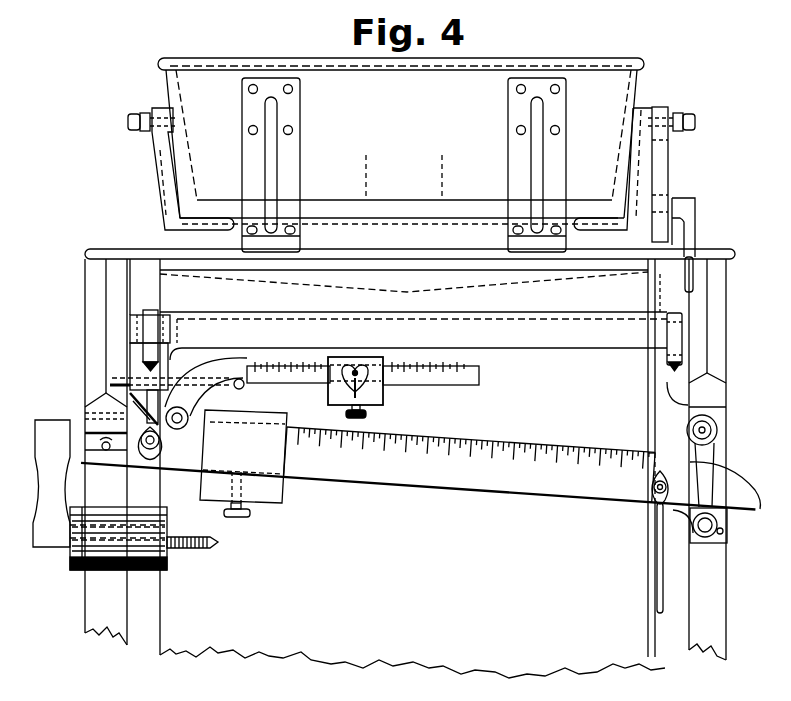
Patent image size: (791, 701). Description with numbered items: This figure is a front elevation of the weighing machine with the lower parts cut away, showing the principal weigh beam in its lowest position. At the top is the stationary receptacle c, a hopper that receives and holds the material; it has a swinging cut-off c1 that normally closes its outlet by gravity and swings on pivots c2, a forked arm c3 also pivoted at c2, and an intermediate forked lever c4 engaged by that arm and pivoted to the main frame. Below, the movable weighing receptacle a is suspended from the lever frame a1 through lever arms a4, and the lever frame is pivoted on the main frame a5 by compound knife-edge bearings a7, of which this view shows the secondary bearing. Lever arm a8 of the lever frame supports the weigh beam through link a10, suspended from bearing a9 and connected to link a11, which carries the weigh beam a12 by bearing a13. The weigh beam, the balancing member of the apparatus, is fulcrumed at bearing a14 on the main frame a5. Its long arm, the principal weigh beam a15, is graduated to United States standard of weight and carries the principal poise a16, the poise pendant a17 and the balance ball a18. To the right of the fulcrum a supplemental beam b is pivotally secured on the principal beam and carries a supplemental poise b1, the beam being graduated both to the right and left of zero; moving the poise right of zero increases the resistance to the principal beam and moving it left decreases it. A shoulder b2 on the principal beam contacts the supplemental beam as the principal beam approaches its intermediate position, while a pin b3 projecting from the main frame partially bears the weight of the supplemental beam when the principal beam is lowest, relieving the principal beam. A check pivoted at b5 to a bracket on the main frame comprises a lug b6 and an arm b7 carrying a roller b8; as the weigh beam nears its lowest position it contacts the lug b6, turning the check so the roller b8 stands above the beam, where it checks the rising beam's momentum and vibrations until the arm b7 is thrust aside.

The stationary receptacle c is at (401, 155).
The swinging cut-off c1 is at (173, 216).
The pivots c2 is at (125, 124).
The forked arm c3 is at (669, 175).
The intermediate forked lever c4 is at (696, 218).
The movable weighing receptacle a is at (410, 463).
The lever frame a1 is at (413, 315).
The lever arms a4 is at (674, 318).
The main frame a5 is at (405, 459).
The bearings a7 is at (158, 367).
The lever arm a8 is at (150, 311).
The bearing a9 is at (136, 329).
The link a10 is at (140, 358).
The link a11 is at (150, 406).
The weigh beam a12 is at (145, 456).
The bearing a13 is at (158, 448).
The fulcrum bearing a14 is at (100, 432).
The principal weigh beam a15 is at (531, 484).
The principal poise a16 is at (243, 463).
The poise pendant a17 is at (661, 565).
The balance ball a18 is at (165, 552).
The supplemental beam b is at (440, 384).
The supplemental poise b1 is at (368, 390).
The shoulder b2 is at (196, 412).
The pin b3 is at (243, 388).
The pivot b5 is at (721, 527).
The lug b6 is at (668, 517).
The arm b7 is at (715, 468).
The roller b8 is at (717, 431).